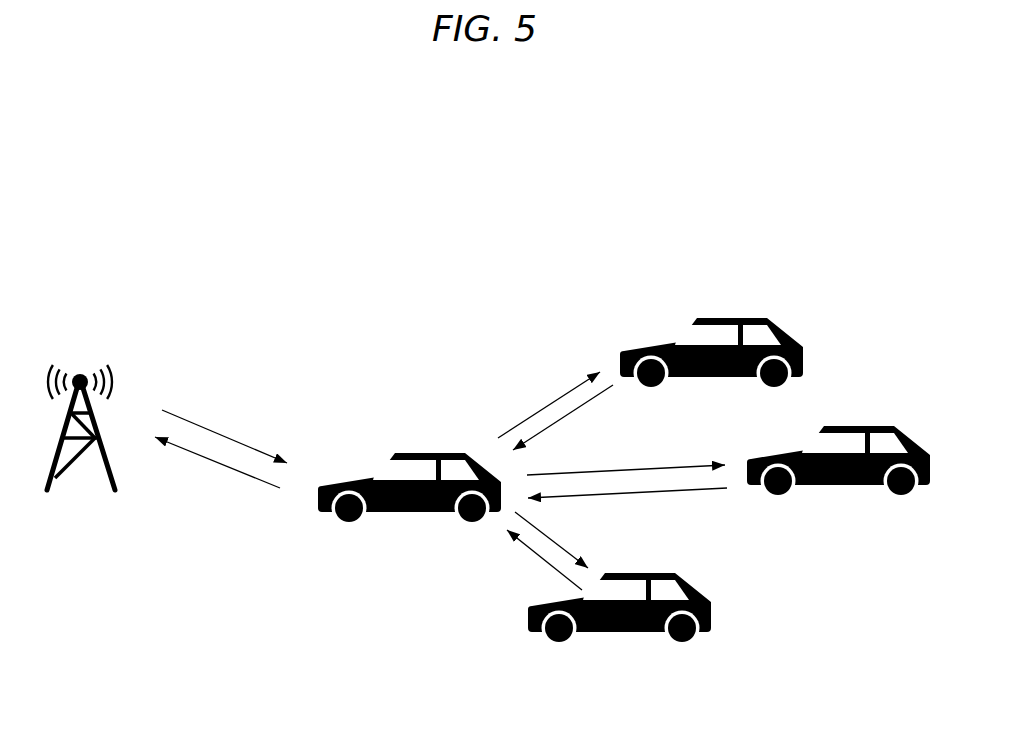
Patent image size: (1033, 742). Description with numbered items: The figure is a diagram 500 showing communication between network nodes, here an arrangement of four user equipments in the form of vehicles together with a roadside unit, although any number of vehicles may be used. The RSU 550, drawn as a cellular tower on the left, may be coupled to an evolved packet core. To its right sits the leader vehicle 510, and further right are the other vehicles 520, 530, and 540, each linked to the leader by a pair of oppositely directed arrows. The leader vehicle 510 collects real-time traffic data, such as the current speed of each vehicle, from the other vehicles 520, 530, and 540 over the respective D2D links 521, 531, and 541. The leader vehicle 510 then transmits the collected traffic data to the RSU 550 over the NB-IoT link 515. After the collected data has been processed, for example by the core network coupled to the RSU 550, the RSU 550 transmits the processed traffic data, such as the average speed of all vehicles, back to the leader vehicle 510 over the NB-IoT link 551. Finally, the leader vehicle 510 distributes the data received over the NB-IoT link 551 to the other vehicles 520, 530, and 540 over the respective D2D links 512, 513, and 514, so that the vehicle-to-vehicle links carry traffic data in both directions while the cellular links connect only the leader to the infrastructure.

The vehicle platoon communication system 500 is at (511, 88).
The leader vehicle 510 is at (406, 443).
The vehicle 520 is at (774, 309).
The vehicle 530 is at (897, 420).
The vehicle 540 is at (672, 569).
The RSU 550 is at (99, 525).
The D2D link 512 is at (541, 394).
The D2D link 521 is at (634, 423).
The D2D link 513 is at (699, 456).
The D2D link 531 is at (716, 522).
The D2D link 514 is at (607, 549).
The D2D link 541 is at (531, 581).
The NB-IoT link 551 is at (254, 428).
The NB-IoT link 515 is at (214, 491).